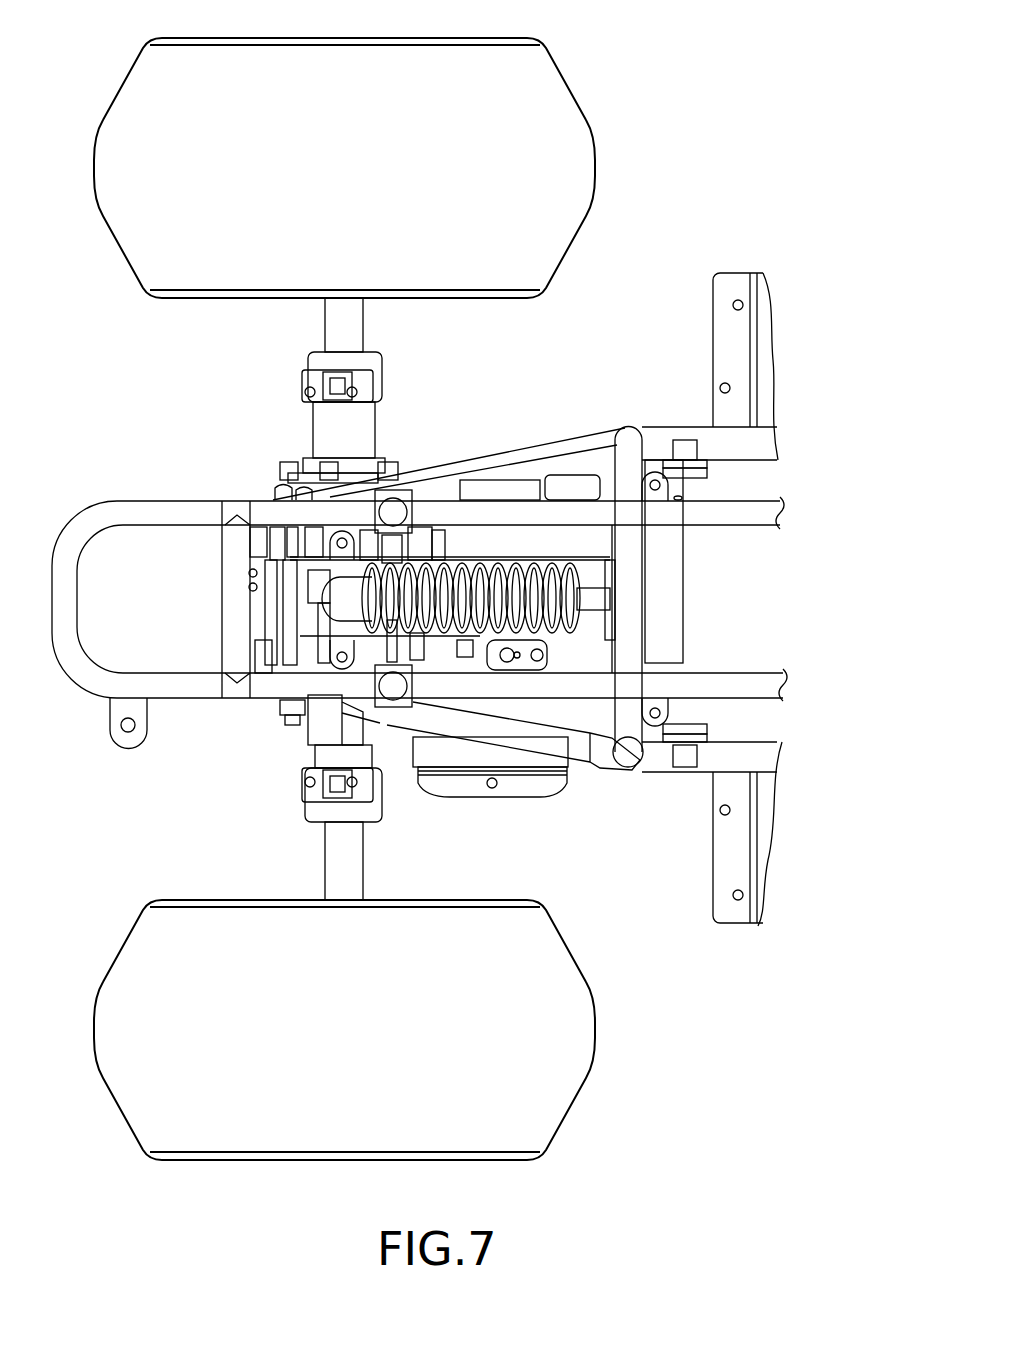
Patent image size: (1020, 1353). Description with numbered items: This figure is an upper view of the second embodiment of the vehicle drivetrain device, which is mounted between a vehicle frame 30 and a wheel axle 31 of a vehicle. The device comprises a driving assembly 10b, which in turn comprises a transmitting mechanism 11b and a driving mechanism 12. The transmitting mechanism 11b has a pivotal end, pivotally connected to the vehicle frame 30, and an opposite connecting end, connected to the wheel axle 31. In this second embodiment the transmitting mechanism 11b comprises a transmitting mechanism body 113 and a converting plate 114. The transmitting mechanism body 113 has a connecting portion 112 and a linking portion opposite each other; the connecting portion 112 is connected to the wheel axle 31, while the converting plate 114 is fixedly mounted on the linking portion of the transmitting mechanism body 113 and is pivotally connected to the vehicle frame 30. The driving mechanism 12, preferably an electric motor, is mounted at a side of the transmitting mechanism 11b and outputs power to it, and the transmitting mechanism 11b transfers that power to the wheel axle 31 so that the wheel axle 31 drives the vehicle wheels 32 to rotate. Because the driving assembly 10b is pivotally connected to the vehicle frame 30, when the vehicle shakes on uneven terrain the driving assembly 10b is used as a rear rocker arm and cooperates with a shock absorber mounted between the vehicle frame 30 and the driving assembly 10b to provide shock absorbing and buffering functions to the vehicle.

The driving assembly 10b is at (205, 770).
The transmitting mechanism 11b is at (258, 477).
The connecting portion 112 is at (260, 560).
The transmitting mechanism body 113 is at (495, 487).
The converting plate 114 is at (675, 543).
The driving mechanism 12 is at (518, 787).
The vehicle frame 30 is at (607, 420).
The wheel axle 31 is at (343, 873).
The vehicle wheels 32 is at (547, 1073).